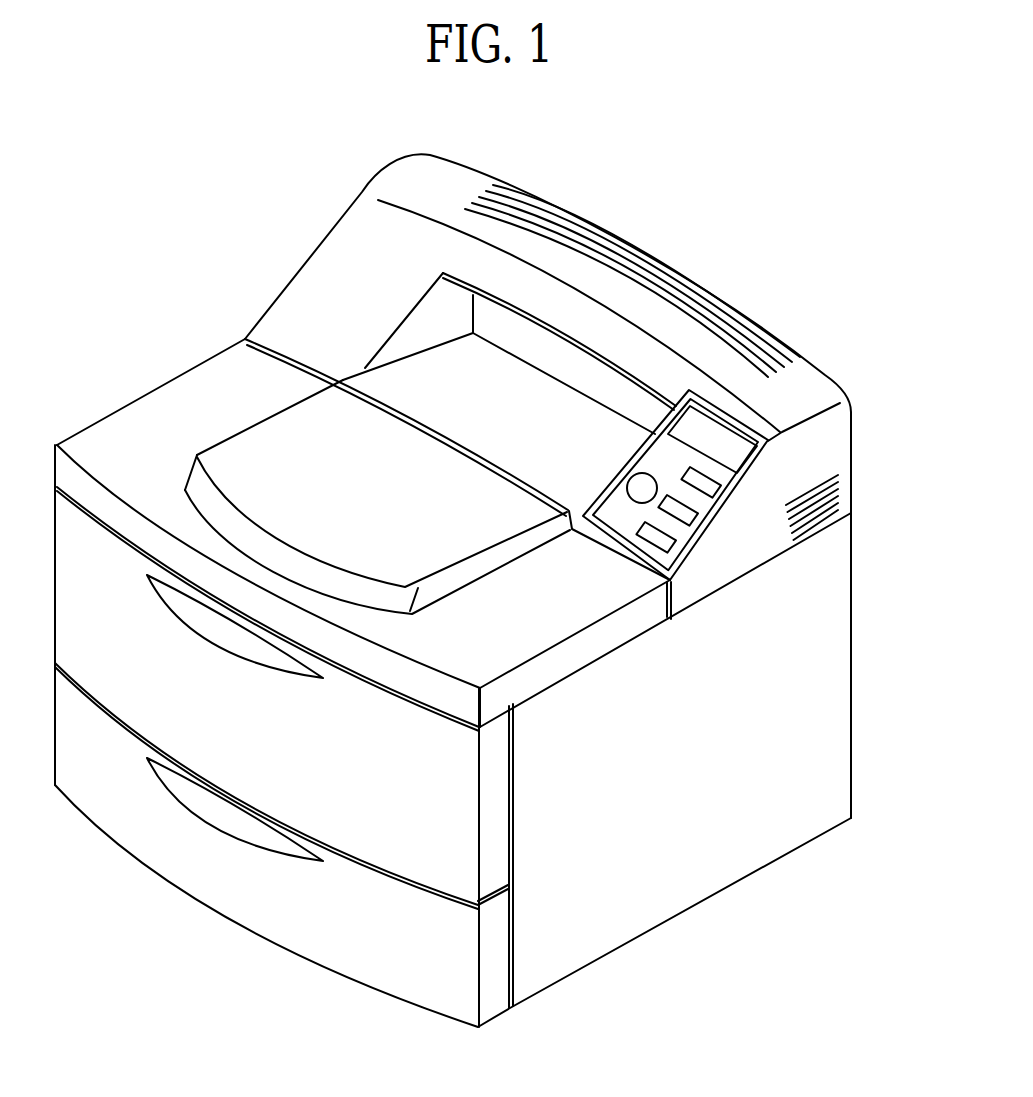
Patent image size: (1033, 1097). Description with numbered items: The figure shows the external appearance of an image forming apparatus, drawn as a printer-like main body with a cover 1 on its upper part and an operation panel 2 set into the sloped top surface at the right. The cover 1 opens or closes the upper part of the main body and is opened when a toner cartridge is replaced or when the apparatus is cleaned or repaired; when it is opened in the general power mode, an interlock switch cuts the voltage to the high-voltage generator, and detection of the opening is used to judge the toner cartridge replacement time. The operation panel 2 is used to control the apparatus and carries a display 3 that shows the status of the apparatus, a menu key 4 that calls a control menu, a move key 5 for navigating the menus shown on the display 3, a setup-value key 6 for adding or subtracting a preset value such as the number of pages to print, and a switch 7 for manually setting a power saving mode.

The cover 1 is at (265, 450).
The operation panel 2 is at (738, 419).
The display 3 is at (730, 447).
The menu key 4 is at (705, 491).
The move key 5 is at (688, 517).
The setup-value key 6 is at (663, 544).
The switch 7 is at (636, 485).